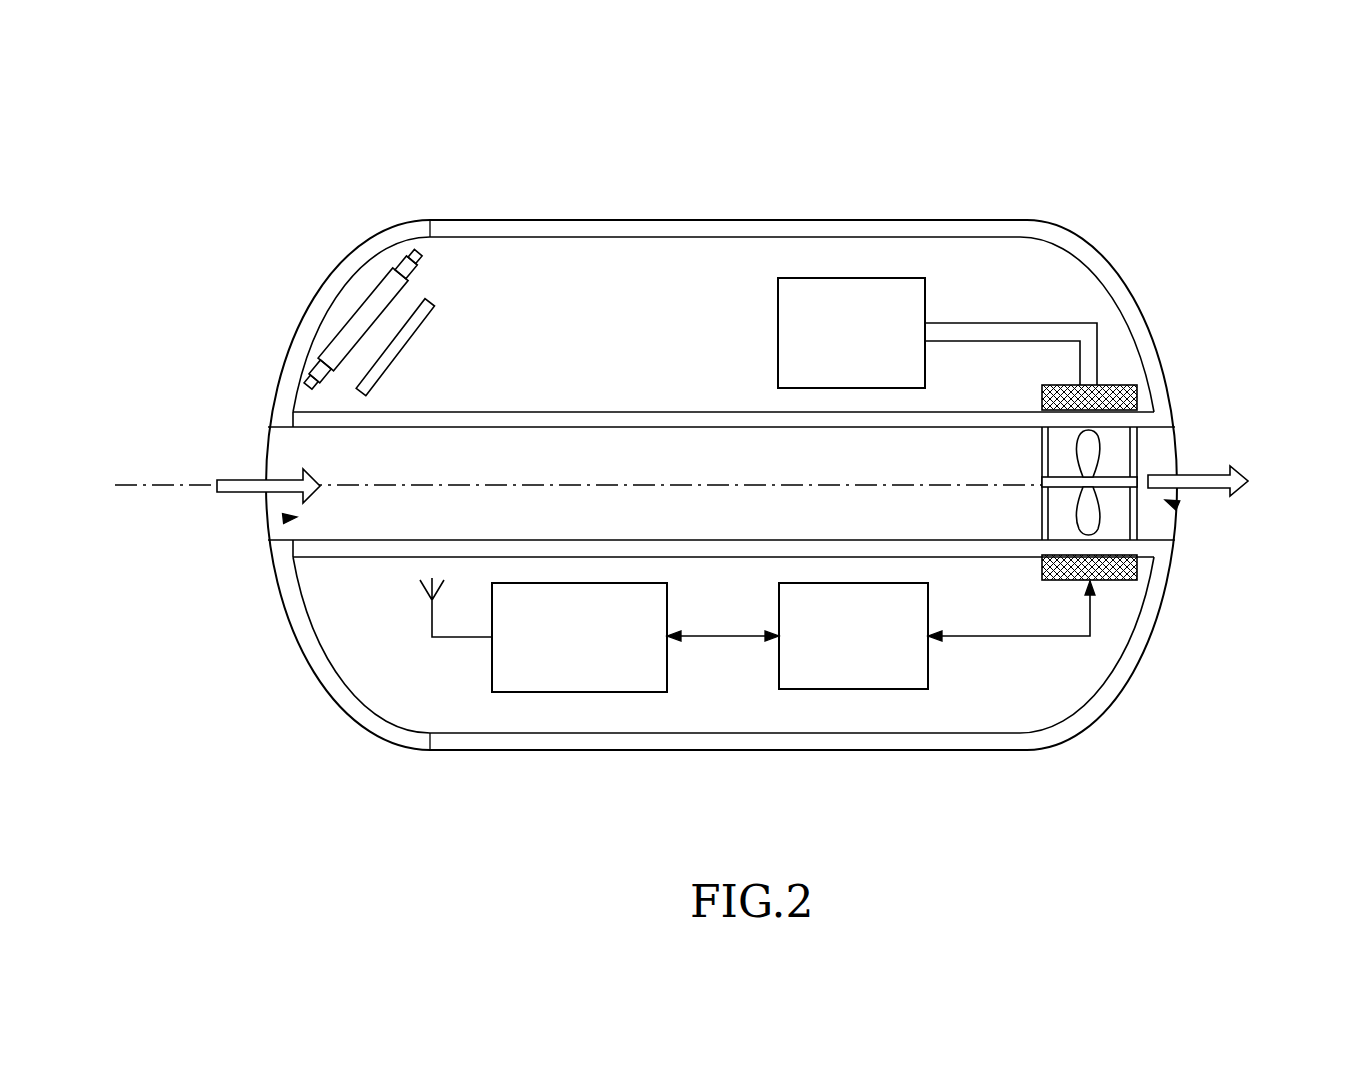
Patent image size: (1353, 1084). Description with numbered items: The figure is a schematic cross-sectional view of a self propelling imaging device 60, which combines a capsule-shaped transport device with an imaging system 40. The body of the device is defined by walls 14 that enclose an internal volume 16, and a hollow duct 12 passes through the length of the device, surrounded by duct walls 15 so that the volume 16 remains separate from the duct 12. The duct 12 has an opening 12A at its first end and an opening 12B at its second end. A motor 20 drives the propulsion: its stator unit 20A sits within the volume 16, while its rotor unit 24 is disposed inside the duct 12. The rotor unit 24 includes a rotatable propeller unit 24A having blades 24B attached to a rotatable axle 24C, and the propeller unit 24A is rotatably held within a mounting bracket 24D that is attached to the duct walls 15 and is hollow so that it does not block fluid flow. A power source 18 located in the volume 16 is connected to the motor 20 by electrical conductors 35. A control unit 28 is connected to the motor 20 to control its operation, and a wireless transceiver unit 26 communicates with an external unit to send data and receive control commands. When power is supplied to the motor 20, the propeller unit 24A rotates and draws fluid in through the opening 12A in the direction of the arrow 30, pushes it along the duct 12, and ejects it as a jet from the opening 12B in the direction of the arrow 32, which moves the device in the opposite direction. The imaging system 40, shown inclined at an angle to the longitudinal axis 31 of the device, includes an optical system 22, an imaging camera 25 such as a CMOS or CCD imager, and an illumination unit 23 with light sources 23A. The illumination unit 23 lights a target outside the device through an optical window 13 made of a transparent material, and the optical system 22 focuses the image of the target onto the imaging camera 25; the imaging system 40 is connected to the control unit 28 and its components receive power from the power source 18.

The imaging device 60 is at (328, 120).
The hollow duct 12 is at (676, 456).
The opening 12A is at (290, 518).
The opening 12B is at (1172, 501).
The optical window 13 is at (355, 262).
The walls 14 is at (610, 220).
The duct walls 15 is at (645, 430).
The internal volume 16 is at (652, 270).
The power source 18 is at (848, 278).
The motor 20 is at (1125, 588).
The stator unit 20A is at (1118, 385).
The optical system 22 is at (332, 264).
The illumination unit 23 is at (428, 266).
The light sources 23A is at (398, 250).
The rotor unit 24 is at (1099, 473).
The rotatable propeller unit 24A is at (1118, 470).
The blades 24B is at (1160, 447).
The rotatable axle 24C is at (1040, 470).
The mounting bracket 24D is at (1040, 437).
The imaging camera 25 is at (405, 337).
The transceiver unit 26 is at (568, 693).
The control unit 28 is at (850, 690).
The arrow 30 is at (245, 481).
The longitudinal axis 31 is at (175, 490).
The arrow 32 is at (1208, 489).
The electrical conductors 35 is at (1073, 318).
The imaging system 40 is at (470, 262).